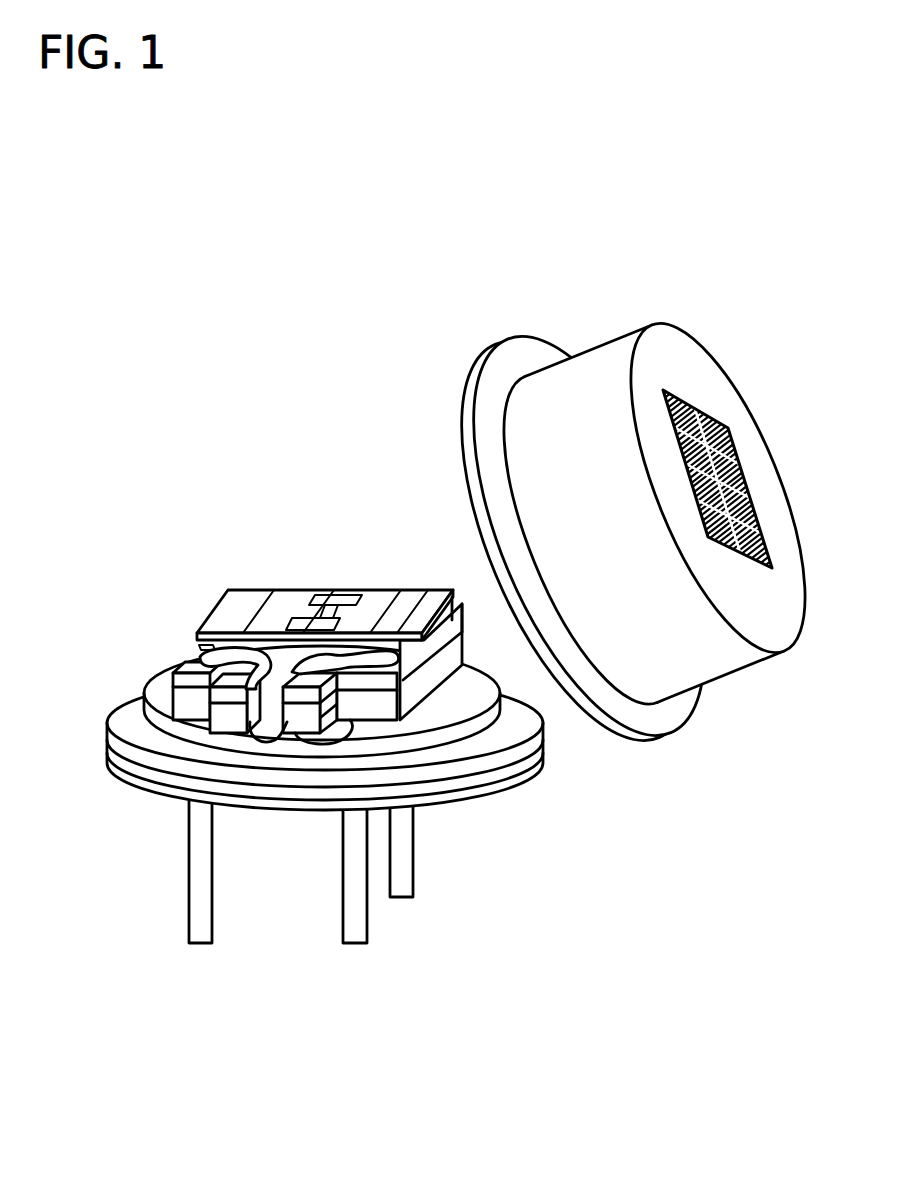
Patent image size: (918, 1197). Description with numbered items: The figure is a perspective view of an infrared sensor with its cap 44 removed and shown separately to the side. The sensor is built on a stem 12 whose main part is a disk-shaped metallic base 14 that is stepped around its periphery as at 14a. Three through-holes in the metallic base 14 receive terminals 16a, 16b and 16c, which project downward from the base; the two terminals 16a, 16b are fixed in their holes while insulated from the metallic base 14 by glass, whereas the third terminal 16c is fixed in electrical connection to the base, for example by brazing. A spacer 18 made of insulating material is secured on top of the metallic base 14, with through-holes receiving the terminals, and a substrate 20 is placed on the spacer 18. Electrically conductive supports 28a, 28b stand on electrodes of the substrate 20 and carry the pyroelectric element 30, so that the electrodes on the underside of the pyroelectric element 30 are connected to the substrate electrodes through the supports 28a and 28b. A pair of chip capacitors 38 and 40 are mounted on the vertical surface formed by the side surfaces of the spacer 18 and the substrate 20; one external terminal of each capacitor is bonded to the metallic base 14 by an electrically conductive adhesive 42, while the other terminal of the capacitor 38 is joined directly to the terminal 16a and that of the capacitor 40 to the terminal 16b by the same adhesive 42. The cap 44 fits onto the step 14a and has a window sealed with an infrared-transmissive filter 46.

The stem 12 is at (503, 780).
The metallic base 14 is at (380, 766).
The step 14a is at (492, 736).
The terminal 16a is at (198, 906).
The terminal 16b is at (351, 922).
The terminal 16c is at (407, 873).
The spacer 18 is at (187, 700).
The substrate 20 is at (173, 673).
The support 28a is at (466, 606).
The support 28b is at (199, 646).
The pyroelectric element 30 is at (345, 598).
The capacitor 38 is at (218, 708).
The capacitor 40 is at (295, 713).
The electrically conductive adhesive 42 is at (197, 648).
The cap 44 is at (588, 372).
The infrared-transmissive filter 46 is at (727, 427).